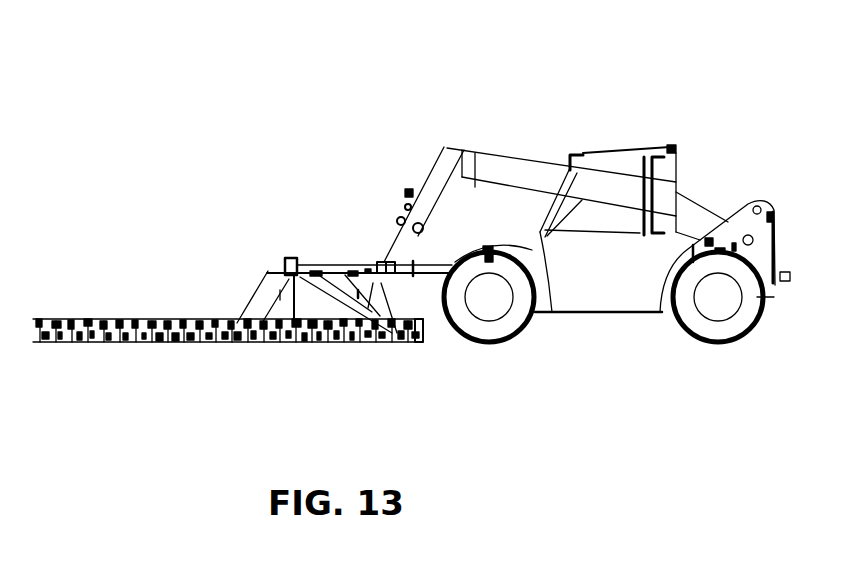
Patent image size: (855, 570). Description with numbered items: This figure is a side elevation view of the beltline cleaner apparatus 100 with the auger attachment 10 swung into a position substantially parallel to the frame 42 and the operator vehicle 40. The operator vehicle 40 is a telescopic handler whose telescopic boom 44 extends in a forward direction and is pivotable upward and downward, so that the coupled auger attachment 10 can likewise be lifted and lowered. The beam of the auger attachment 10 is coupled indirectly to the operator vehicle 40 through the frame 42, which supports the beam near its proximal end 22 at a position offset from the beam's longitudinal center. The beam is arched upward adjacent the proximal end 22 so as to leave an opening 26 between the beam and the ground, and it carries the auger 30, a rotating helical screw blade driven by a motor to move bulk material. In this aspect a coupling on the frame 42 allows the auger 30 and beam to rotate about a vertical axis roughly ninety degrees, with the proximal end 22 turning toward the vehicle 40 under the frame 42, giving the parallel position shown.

The auger attachment 10 is at (250, 238).
The proximal end 22 is at (392, 335).
The opening 26 is at (340, 308).
The auger 30 is at (137, 343).
The operator vehicle 40 is at (686, 137).
The frame 42 is at (325, 262).
The boom 44 is at (458, 161).
The beltline cleaner apparatus 100 is at (541, 388).